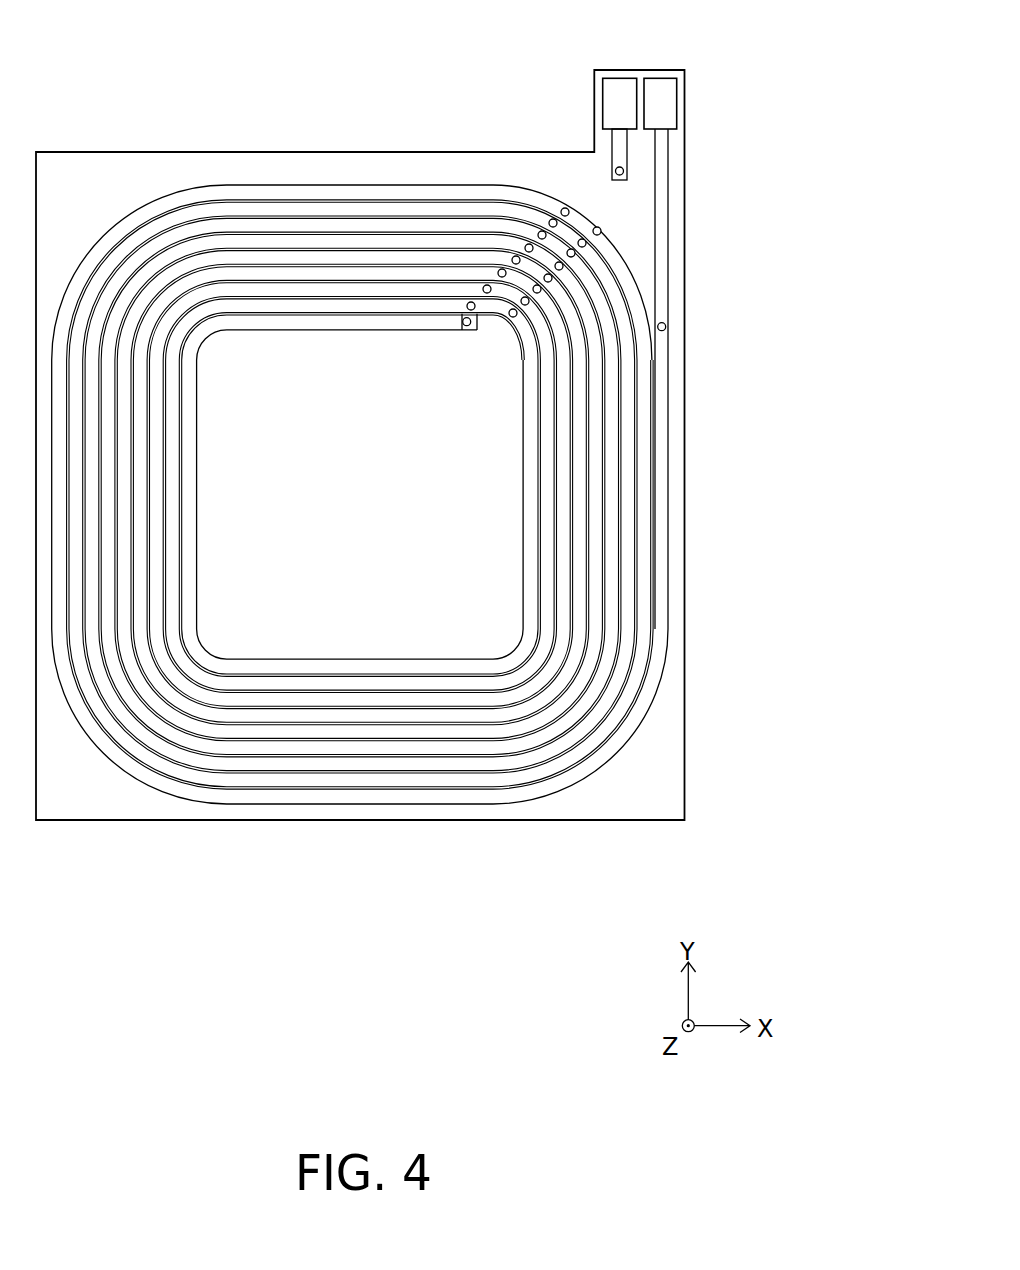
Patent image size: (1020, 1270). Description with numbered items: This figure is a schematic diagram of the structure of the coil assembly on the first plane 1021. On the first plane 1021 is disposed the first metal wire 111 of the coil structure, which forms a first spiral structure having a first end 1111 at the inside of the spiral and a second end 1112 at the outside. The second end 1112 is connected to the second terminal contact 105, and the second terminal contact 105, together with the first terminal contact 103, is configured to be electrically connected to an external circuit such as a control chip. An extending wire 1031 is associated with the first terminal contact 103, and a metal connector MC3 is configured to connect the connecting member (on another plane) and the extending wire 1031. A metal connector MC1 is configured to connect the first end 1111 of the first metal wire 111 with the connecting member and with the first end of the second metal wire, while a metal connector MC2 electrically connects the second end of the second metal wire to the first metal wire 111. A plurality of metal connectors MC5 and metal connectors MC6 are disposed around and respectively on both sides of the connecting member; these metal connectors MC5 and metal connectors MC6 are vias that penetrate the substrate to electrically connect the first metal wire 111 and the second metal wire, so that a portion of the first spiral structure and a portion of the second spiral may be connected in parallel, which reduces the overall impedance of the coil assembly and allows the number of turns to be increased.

The first terminal contact 103 is at (618, 85).
The second terminal contact 105 is at (660, 85).
The extending wire 1031 is at (625, 157).
The second end 1112 is at (663, 195).
The first end 1111 is at (438, 322).
The first metal wire 111 is at (671, 478).
The first plane 1021 is at (670, 713).
The metal connector MC1 is at (467, 327).
The metal connector MC2 is at (665, 323).
The metal connector MC3 is at (613, 171).
The metal connectors MC5 is at (564, 207).
The metal connectors MC6 is at (600, 231).